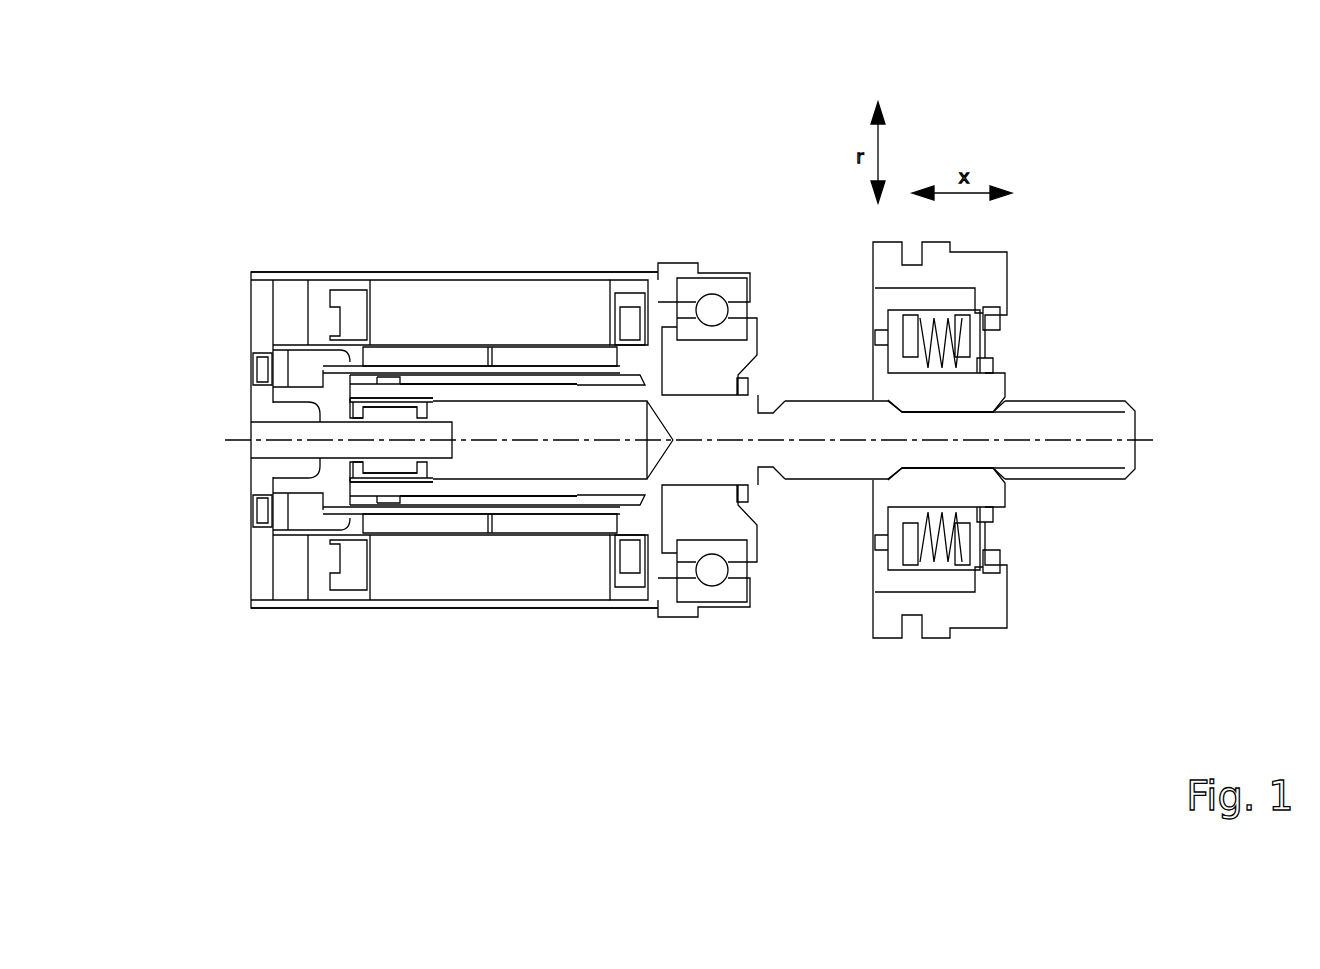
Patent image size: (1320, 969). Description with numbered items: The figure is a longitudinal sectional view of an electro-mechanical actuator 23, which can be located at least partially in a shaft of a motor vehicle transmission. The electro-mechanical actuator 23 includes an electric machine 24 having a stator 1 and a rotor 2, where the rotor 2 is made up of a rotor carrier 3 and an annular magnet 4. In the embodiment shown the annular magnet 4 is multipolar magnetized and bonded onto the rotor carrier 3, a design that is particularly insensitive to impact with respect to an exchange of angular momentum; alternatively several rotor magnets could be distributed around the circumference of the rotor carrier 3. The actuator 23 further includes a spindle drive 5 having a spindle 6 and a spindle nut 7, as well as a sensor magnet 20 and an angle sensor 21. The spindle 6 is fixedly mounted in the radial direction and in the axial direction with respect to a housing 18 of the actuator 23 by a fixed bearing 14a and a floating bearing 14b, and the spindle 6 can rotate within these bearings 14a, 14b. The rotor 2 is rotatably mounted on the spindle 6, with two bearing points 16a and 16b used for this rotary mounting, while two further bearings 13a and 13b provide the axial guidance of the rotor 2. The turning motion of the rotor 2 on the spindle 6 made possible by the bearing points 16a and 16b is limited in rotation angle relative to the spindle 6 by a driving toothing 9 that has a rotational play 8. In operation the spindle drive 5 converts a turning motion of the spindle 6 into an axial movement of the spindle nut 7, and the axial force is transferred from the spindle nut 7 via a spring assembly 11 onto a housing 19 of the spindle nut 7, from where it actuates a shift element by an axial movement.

The stator 1 is at (447, 318).
The rotor 2 is at (625, 357).
The rotor carrier 3 is at (565, 378).
The annular magnet 4 is at (510, 360).
The spindle drive 5 is at (1015, 388).
The spindle 6 is at (1122, 432).
The spindle nut 7 is at (993, 390).
The rotational play 8 is at (520, 498).
The driving toothing 9 is at (520, 498).
The spring assembly 11 is at (940, 543).
The bearing 13a is at (633, 383).
The bearing 13b is at (663, 387).
The fixed bearing 14a is at (705, 592).
The floating bearing 14b is at (392, 467).
The bearing point 16a is at (628, 588).
The bearing point 16b is at (362, 502).
The housing 18 is at (470, 612).
The housing of the spindle nut 19 is at (962, 603).
The sensor magnet 20 is at (283, 360).
The angle sensor 21 is at (263, 375).
The electro-mechanical actuator 23 is at (275, 230).
The electric machine 24 is at (355, 262).